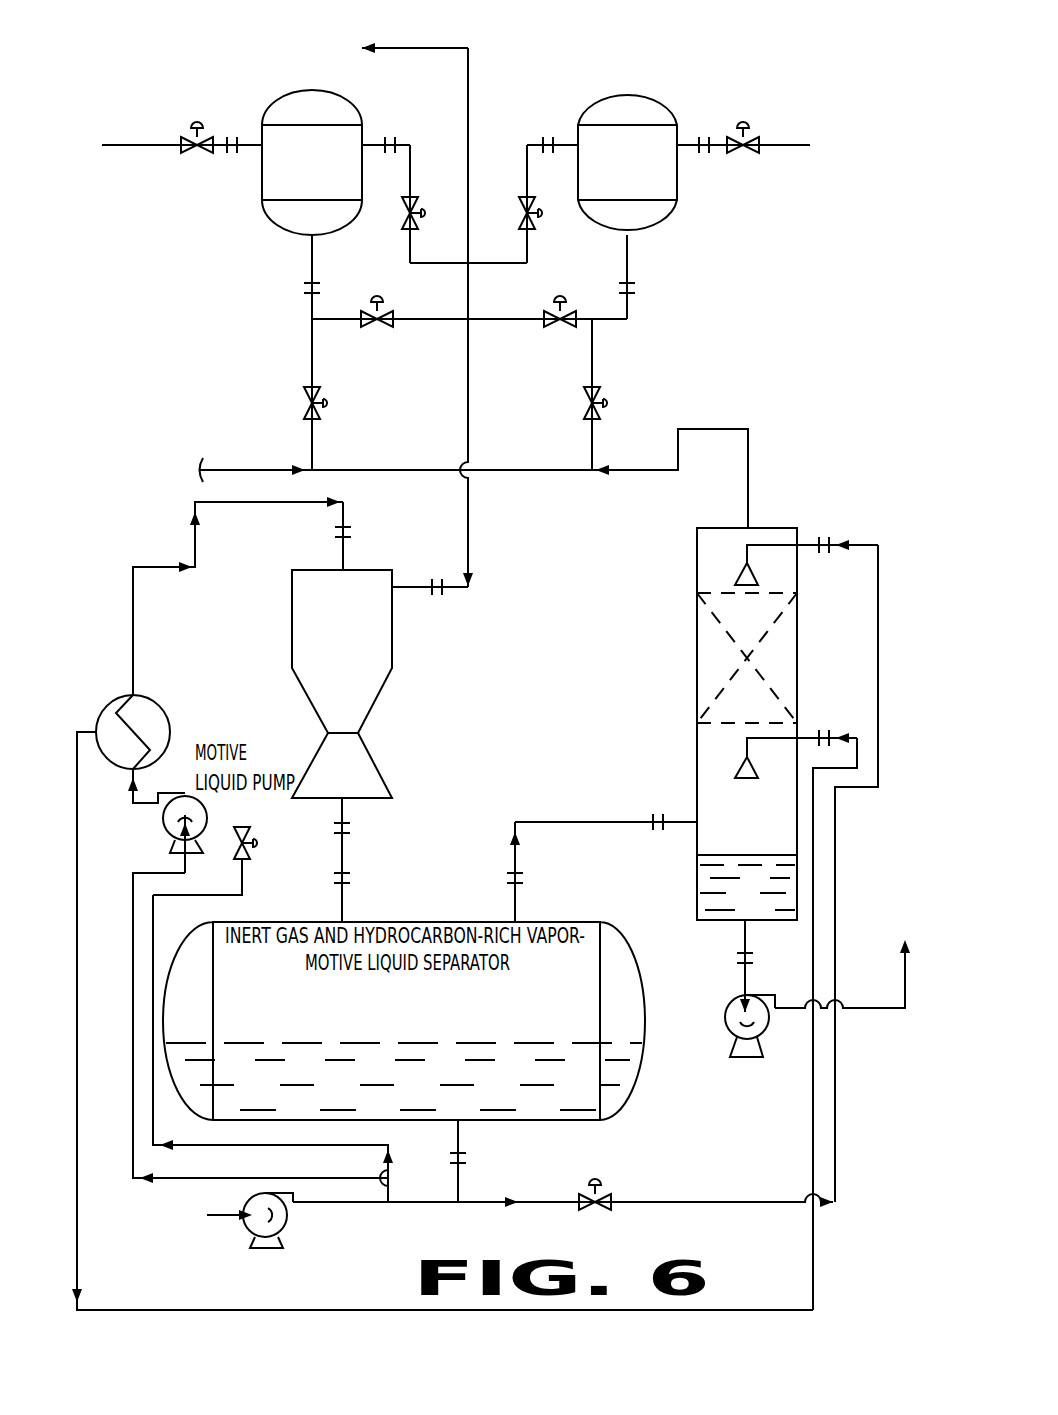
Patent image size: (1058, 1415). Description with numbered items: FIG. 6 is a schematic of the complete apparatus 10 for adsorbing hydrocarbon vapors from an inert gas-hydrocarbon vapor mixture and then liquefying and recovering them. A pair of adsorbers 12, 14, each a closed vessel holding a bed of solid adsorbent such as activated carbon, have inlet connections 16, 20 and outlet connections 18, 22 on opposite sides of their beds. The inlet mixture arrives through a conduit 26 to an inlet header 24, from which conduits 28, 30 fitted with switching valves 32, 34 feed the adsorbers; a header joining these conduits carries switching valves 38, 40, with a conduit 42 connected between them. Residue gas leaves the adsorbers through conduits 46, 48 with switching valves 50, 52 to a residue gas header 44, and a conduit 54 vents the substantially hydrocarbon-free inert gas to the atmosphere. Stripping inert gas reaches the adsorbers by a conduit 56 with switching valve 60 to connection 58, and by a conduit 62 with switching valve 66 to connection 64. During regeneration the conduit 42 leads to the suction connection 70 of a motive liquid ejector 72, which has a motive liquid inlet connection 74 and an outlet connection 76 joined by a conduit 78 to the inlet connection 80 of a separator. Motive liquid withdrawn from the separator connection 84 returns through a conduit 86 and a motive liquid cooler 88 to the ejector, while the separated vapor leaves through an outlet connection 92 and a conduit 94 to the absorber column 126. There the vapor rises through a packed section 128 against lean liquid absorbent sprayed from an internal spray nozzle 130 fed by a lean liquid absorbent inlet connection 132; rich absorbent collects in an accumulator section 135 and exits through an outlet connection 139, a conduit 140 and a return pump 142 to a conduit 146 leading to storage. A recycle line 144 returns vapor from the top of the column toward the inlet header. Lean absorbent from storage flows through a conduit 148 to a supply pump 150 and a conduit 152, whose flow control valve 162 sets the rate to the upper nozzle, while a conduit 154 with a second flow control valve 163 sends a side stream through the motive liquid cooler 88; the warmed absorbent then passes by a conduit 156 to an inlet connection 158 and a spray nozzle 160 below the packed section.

The apparatus 10 is at (650, 62).
The adsorber 12 is at (677, 190).
The adsorber 14 is at (262, 190).
The inlet connection 16 is at (627, 260).
The outlet connection 18 is at (565, 140).
The inlet connection 20 is at (312, 262).
The outlet connection 22 is at (373, 140).
The inert gas-hydrocarbon vapor mixture inlet header 24 is at (333, 468).
The conduit 26 is at (258, 468).
The conduit 28 is at (595, 350).
The conduit 30 is at (310, 350).
The switching valve 32 is at (590, 425).
The switching valve 34 is at (305, 393).
The switching valve 38 is at (572, 330).
The switching valve 40 is at (362, 330).
The conduit 42 is at (470, 430).
The residue gas header 44 is at (512, 260).
The conduit 46 is at (525, 160).
The conduit 48 is at (412, 155).
The switching valve 50 is at (525, 200).
The switching valve 52 is at (415, 200).
The conduit 54 is at (466, 135).
The conduit 56 is at (762, 150).
The inert stripping gas connection 58 is at (690, 140).
The switching valve 60 is at (742, 126).
The conduit 62 is at (160, 148).
The connection 64 is at (250, 140).
The switching valve 66 is at (197, 125).
The suction connection 70 is at (400, 568).
The motive liquid ejector 72 is at (375, 705).
The motive liquid inlet connection 74 is at (340, 555).
The outlet connection 76 is at (347, 815).
The conduit 78 is at (345, 858).
The inlet connection 80 is at (345, 900).
The connection 84 is at (463, 1140).
The conduit 86 is at (165, 566).
The motive liquid cooler 88 is at (150, 698).
The outlet connection 92 is at (520, 905).
The conduit 94 is at (537, 826).
The absorber column 126 is at (690, 765).
The packed section 128 is at (715, 672).
The internal spray nozzle 130 is at (740, 580).
The lean liquid absorbent inlet connection 132 is at (807, 548).
The rich liquid absorbent accumulator section 135 is at (710, 880).
The rich liquid absorbent outlet connection 139 is at (745, 940).
The conduit 140 is at (745, 980).
The return pump 142 is at (735, 1025).
The recycle line 144 is at (750, 440).
The conduit 146 is at (908, 975).
The conduit 148 is at (232, 1178).
The supply pump 150 is at (275, 1228).
The conduit 152 is at (425, 1208).
The conduit 154 is at (240, 1148).
The conduit 156 is at (133, 1310).
The inlet connection 158 is at (808, 742).
The spray nozzle 160 is at (740, 778).
The flow control valve 162 is at (605, 1182).
The second flow control valve 163 is at (258, 843).